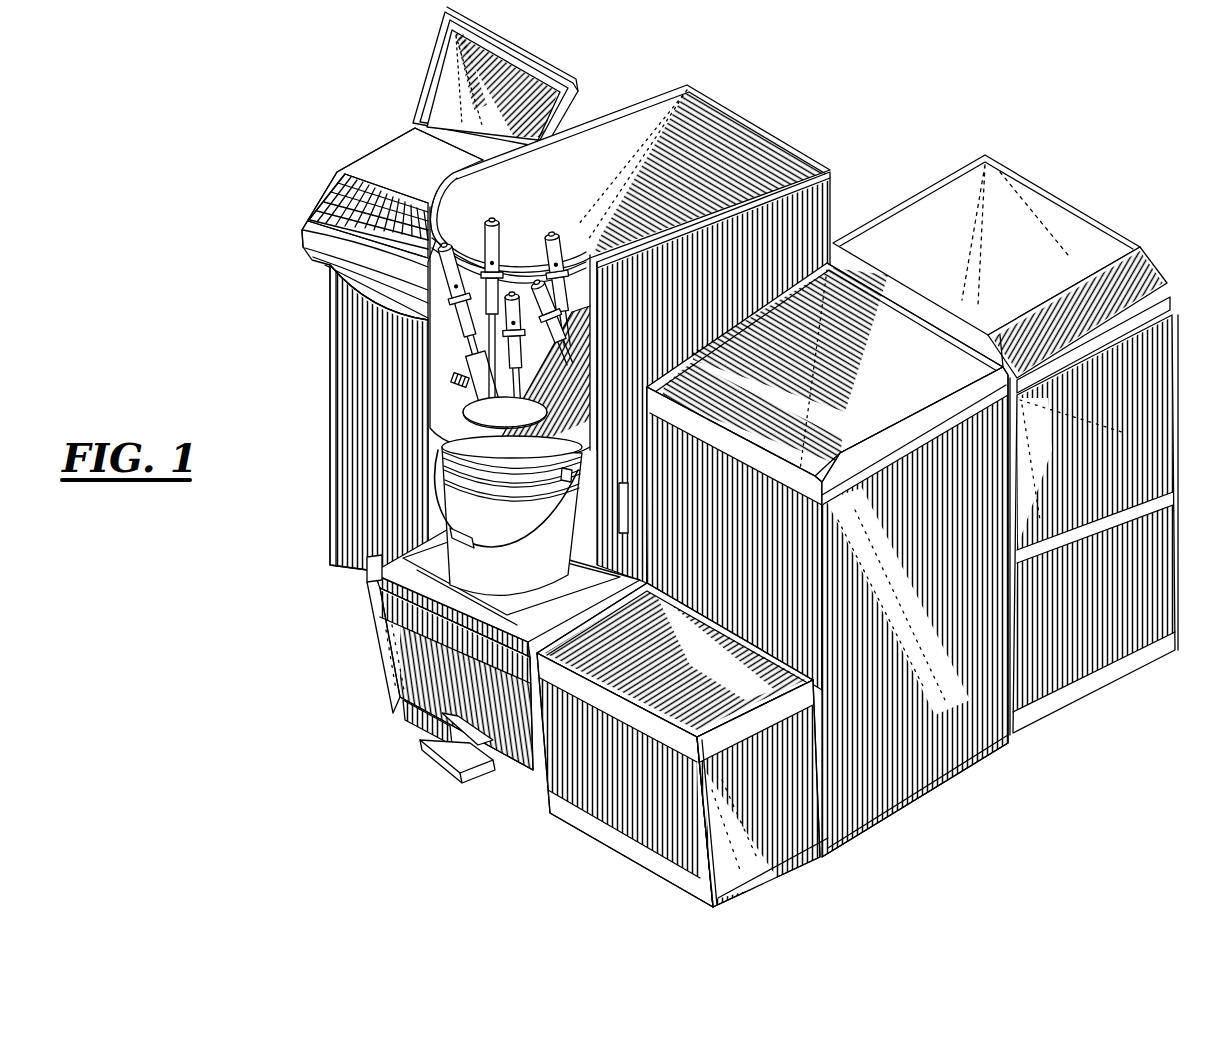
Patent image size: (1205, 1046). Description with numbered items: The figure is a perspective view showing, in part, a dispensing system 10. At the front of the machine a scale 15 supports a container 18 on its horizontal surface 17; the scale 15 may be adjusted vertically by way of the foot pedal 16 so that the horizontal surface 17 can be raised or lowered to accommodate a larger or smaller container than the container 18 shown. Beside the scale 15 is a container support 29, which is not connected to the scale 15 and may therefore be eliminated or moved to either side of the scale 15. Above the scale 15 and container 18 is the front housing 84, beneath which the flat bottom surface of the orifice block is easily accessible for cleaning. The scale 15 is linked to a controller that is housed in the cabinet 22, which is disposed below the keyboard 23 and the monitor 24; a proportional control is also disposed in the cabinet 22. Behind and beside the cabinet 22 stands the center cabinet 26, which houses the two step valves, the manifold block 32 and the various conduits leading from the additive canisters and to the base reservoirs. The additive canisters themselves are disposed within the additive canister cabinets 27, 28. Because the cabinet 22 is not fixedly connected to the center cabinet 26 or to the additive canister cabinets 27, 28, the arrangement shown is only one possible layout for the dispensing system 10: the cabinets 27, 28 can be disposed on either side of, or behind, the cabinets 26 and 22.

The dispensing system 10 is at (1031, 130).
The scale 15 is at (400, 605).
The foot pedal 16 is at (445, 742).
The horizontal surface 17 is at (415, 608).
The container 18 is at (460, 510).
The cabinet 22 is at (330, 410).
The keyboard 23 is at (340, 172).
The monitor 24 is at (431, 62).
The center cabinet 26 is at (787, 227).
The additive canister cabinet 27 is at (903, 330).
The additive canister cabinet 28 is at (1067, 228).
The container support 29 is at (600, 787).
The manifold block 32 is at (550, 423).
The front housing 84 is at (440, 367).